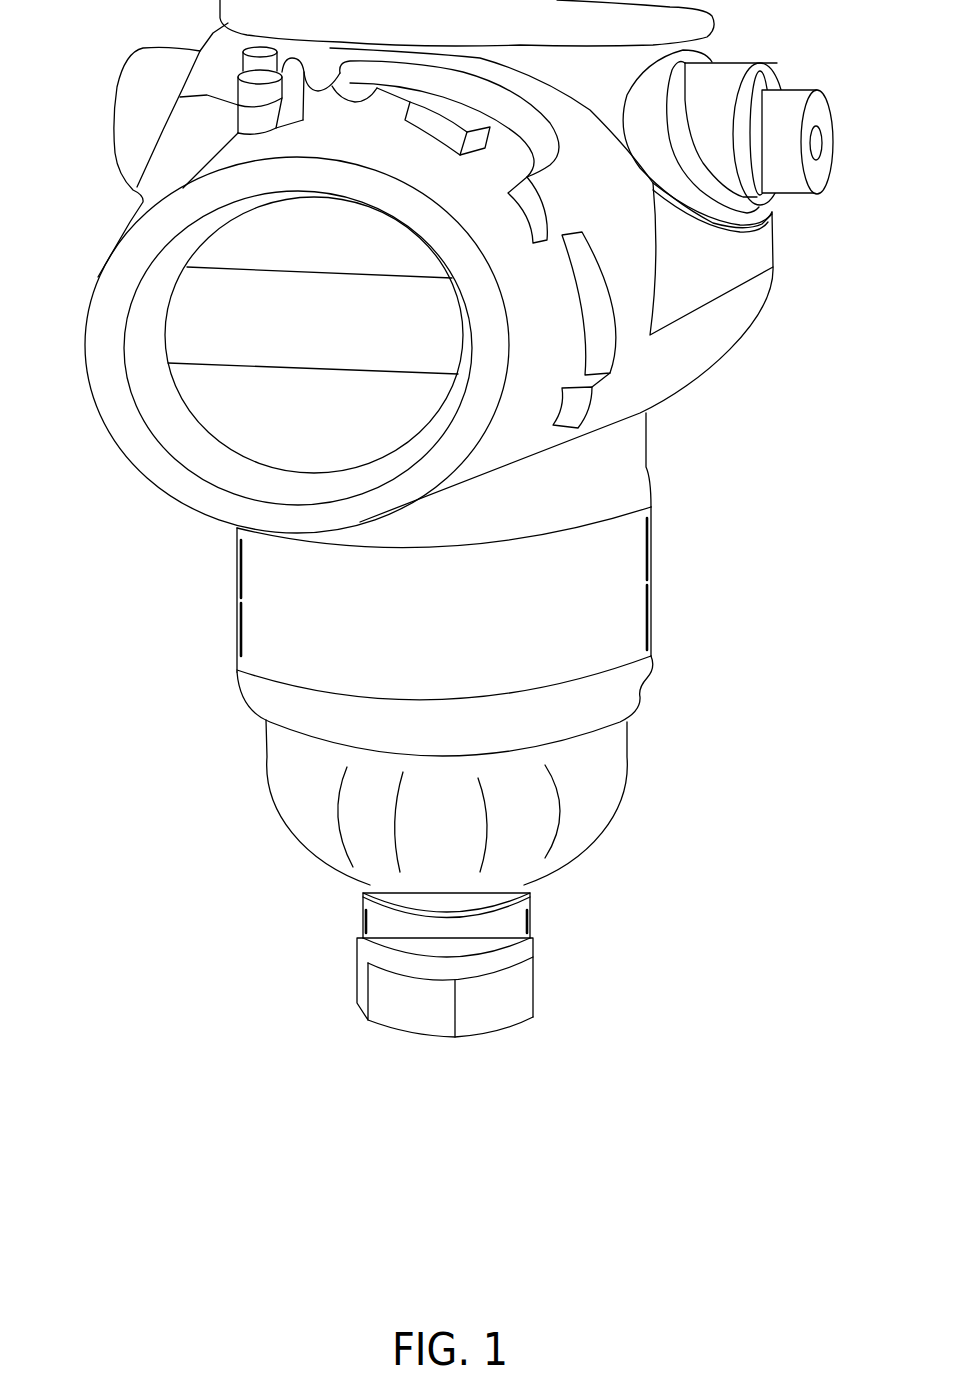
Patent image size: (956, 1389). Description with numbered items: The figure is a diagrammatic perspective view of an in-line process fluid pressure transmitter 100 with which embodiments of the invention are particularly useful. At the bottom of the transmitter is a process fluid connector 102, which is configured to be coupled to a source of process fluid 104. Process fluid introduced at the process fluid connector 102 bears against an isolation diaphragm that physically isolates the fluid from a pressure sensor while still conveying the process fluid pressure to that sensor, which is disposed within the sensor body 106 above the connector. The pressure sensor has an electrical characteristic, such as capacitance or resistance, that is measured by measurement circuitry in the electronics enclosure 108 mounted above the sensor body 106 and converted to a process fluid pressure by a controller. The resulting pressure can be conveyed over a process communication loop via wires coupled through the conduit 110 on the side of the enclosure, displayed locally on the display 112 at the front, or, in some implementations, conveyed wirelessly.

The pressure transmitter 100 is at (753, 500).
The process fluid connector 102 is at (512, 1028).
The source of process fluid 104 is at (428, 1077).
The sensor body 106 is at (650, 583).
The electronics enclosure 108 is at (727, 350).
The conduit 110 is at (118, 171).
The display 112 is at (280, 368).